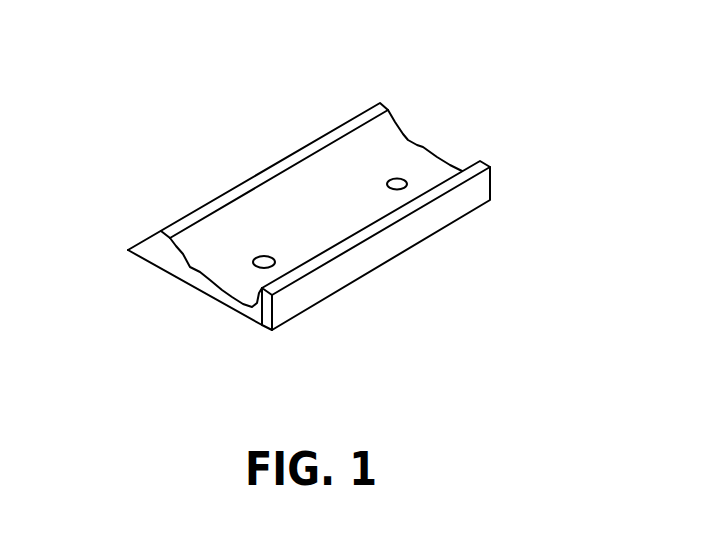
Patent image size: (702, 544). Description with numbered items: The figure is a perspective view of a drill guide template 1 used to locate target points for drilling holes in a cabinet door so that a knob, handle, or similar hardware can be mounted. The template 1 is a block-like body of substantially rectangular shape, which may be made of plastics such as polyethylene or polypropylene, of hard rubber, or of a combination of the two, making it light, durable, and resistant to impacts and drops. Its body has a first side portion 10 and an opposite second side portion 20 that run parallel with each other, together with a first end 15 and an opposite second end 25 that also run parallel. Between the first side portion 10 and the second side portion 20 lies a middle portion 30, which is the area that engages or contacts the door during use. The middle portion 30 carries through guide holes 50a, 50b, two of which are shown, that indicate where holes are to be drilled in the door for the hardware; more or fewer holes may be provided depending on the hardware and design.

The drill guide template 1 is at (129, 114).
The first side portion 10 is at (408, 235).
The first end 15 is at (168, 263).
The second side portion 20 is at (217, 193).
The second end 25 is at (454, 166).
The middle portion 30 is at (347, 180).
The through guide hole 50a is at (253, 263).
The through guide hole 50b is at (401, 178).